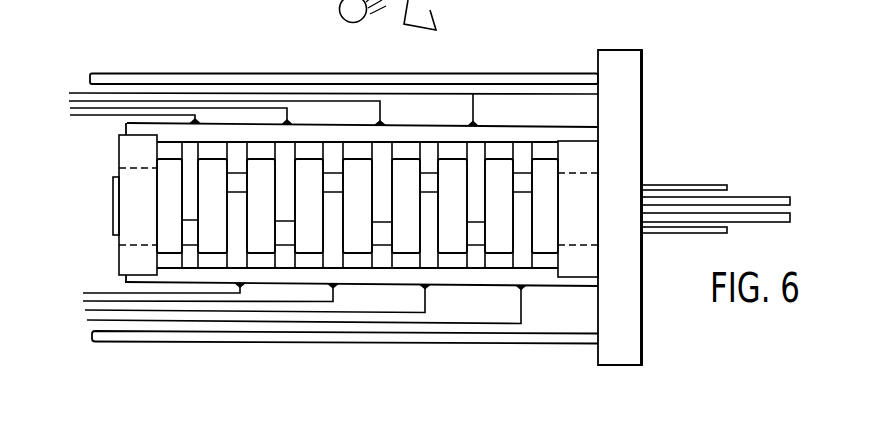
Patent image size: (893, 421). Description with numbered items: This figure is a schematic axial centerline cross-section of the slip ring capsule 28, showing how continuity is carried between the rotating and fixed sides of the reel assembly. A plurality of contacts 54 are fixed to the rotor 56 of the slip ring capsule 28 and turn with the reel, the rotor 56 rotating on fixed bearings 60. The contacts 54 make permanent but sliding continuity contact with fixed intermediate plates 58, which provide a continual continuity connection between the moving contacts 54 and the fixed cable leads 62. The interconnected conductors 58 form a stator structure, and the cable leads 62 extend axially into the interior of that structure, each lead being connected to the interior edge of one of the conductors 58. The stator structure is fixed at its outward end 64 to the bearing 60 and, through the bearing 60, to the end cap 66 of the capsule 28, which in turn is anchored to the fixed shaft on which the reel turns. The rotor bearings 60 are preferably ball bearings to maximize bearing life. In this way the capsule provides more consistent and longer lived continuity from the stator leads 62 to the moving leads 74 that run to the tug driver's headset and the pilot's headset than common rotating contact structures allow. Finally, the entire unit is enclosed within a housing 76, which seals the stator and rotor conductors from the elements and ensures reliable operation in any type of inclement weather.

The slip ring capsule 28 is at (414, 185).
The contacts 54 is at (187, 193).
The rotor 56 is at (530, 135).
The intermediate plates 58 is at (360, 159).
The bearings 60 is at (162, 216).
The cable leads 62 is at (736, 197).
The outward end 64 is at (600, 147).
The end cap 66 is at (627, 318).
The moving leads 74 is at (82, 92).
The housing 76 is at (481, 80).